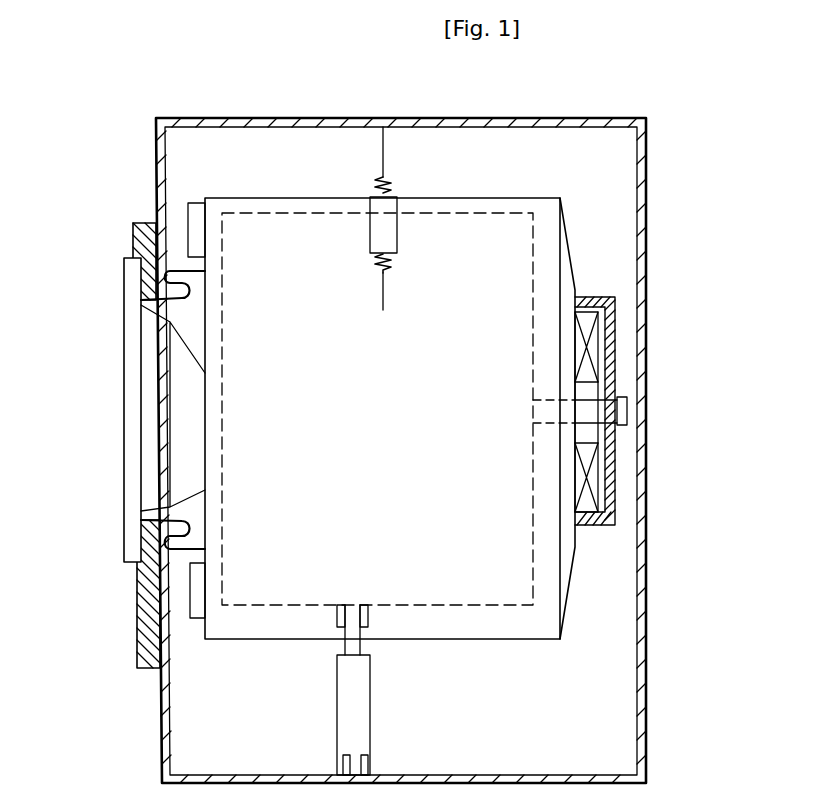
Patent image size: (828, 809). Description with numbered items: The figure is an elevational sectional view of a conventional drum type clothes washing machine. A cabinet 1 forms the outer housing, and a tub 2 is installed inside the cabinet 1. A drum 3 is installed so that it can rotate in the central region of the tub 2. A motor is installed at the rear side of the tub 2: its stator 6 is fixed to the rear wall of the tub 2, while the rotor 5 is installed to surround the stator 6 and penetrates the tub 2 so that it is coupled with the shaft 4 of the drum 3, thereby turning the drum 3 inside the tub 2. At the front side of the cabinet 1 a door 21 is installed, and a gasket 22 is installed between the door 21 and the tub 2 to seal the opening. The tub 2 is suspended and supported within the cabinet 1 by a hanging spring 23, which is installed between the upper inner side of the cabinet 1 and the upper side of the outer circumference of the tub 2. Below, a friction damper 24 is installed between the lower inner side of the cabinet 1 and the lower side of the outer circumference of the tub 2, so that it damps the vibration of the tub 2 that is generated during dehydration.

The cabinet 1 is at (230, 126).
The tub 2 is at (491, 196).
The drum 3 is at (302, 214).
The shaft 4 is at (588, 410).
The rotor 5 is at (617, 480).
The stator 6 is at (590, 345).
The door 21 is at (132, 423).
The gasket 22 is at (188, 550).
The hanging spring 23 is at (392, 180).
The friction damper 24 is at (355, 712).